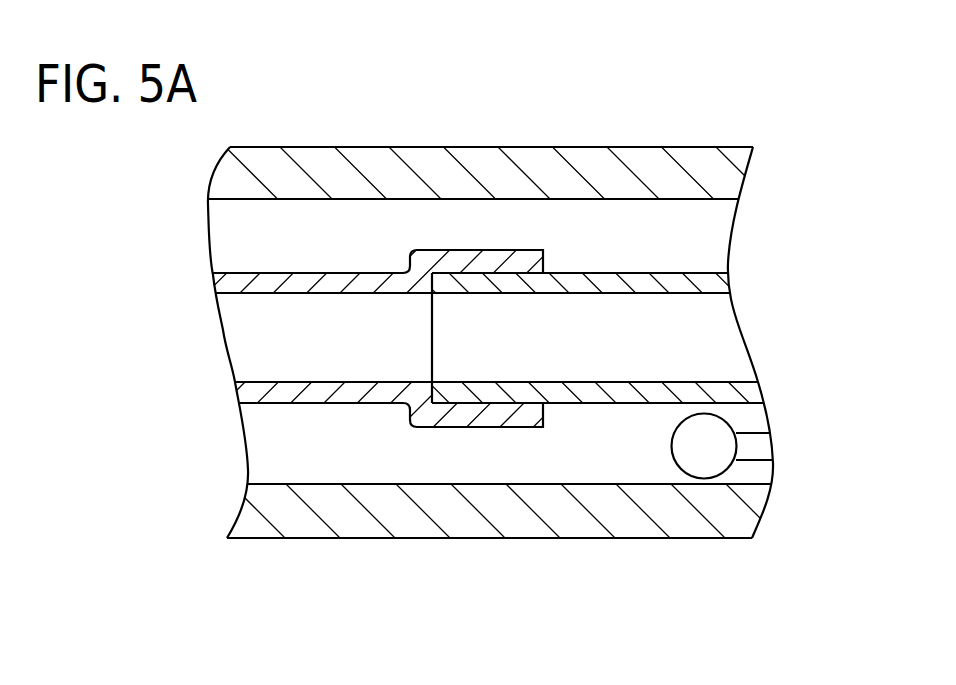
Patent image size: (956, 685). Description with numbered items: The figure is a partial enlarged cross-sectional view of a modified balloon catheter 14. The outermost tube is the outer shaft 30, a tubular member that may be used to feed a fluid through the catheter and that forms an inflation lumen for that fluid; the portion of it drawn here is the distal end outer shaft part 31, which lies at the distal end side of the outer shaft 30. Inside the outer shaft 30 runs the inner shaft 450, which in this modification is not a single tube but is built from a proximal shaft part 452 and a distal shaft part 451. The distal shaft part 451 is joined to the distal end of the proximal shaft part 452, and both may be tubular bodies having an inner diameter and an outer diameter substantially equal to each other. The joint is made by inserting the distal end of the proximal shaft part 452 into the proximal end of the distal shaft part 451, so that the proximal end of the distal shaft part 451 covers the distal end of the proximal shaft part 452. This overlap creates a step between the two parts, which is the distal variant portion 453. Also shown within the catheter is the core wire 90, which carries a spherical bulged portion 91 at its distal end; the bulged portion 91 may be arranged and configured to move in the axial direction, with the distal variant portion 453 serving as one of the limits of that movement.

The balloon catheter 14 is at (515, 58).
The outer shaft 30 is at (697, 147).
The distal end outer shaft part 31 is at (744, 540).
The inner shaft 450 is at (625, 273).
The distal shaft part 451 is at (273, 273).
The proximal shaft part 452 is at (618, 403).
The distal variant portion 453 is at (545, 425).
The core wire 90 is at (760, 450).
The bulged portion 91 is at (692, 465).